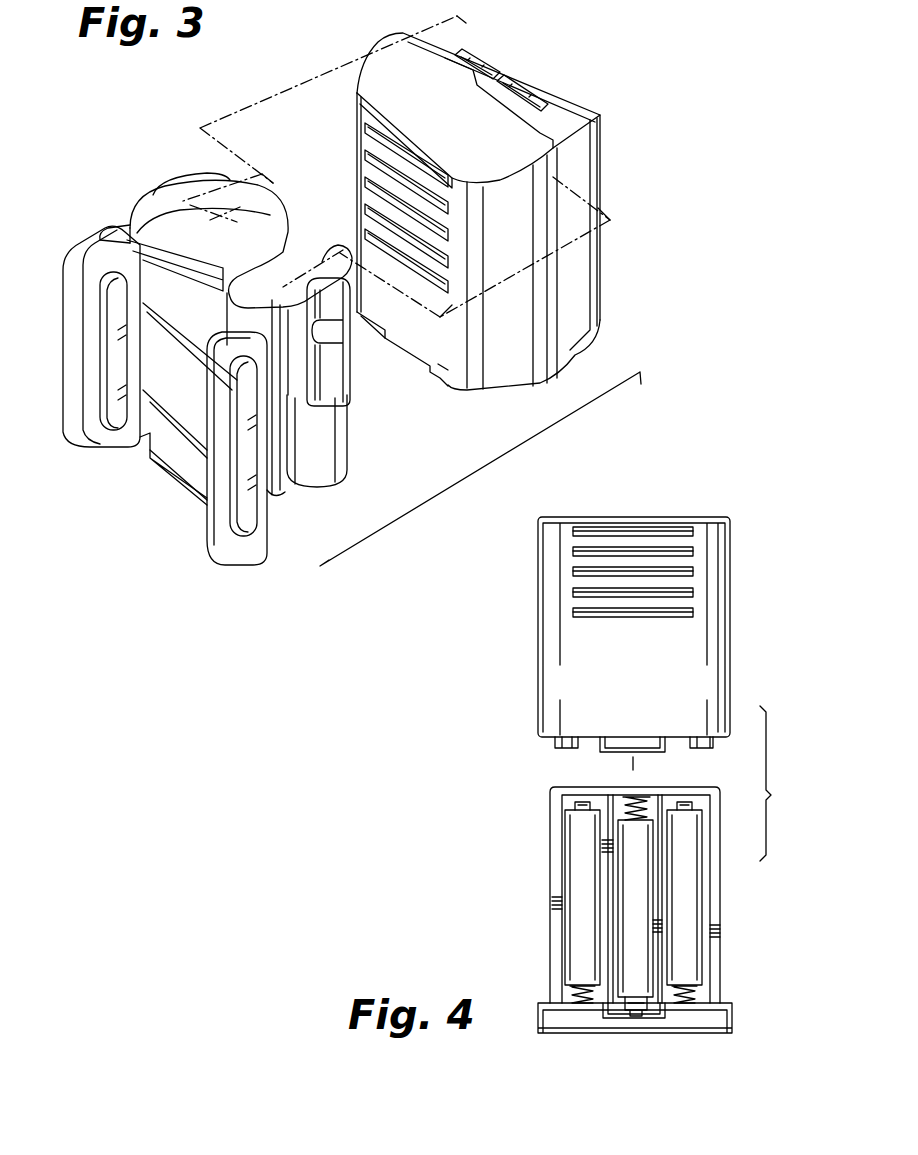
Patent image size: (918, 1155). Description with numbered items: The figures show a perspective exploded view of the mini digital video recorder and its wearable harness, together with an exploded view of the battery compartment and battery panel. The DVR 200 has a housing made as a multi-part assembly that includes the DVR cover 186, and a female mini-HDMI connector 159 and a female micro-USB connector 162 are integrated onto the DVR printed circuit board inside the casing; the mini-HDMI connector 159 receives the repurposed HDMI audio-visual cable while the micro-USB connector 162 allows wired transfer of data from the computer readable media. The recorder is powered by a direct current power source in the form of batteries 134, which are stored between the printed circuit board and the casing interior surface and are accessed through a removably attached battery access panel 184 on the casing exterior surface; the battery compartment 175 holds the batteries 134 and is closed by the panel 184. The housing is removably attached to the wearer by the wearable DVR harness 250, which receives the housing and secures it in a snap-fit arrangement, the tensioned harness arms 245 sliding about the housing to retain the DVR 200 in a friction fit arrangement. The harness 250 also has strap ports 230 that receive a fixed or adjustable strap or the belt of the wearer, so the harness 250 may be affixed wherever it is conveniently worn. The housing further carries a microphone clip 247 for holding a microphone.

In FIG. 3, the DVR 200 is at (652, 108).
In FIG. 3, the female micro-USB connector 162 is at (480, 60).
In FIG. 3, the female mini-HDMI connector 159 is at (530, 90).
In FIG. 3, the battery access panel 184 is at (357, 213).
In FIG. 4, the battery access panel 184 is at (538, 627).
In FIG. 3, the DVR cover 186 is at (600, 172).
In FIG. 3, the wearable DVR harness 250 is at (283, 197).
In FIG. 3, the strap ports 230 is at (97, 440).
In FIG. 3, the tensioned harness arms 245 is at (147, 210).
In FIG. 3, the microphone clip 247 is at (340, 371).
In FIG. 4, the battery holder 175 is at (542, 883).
In FIG. 4, the batteries 134 is at (577, 962).